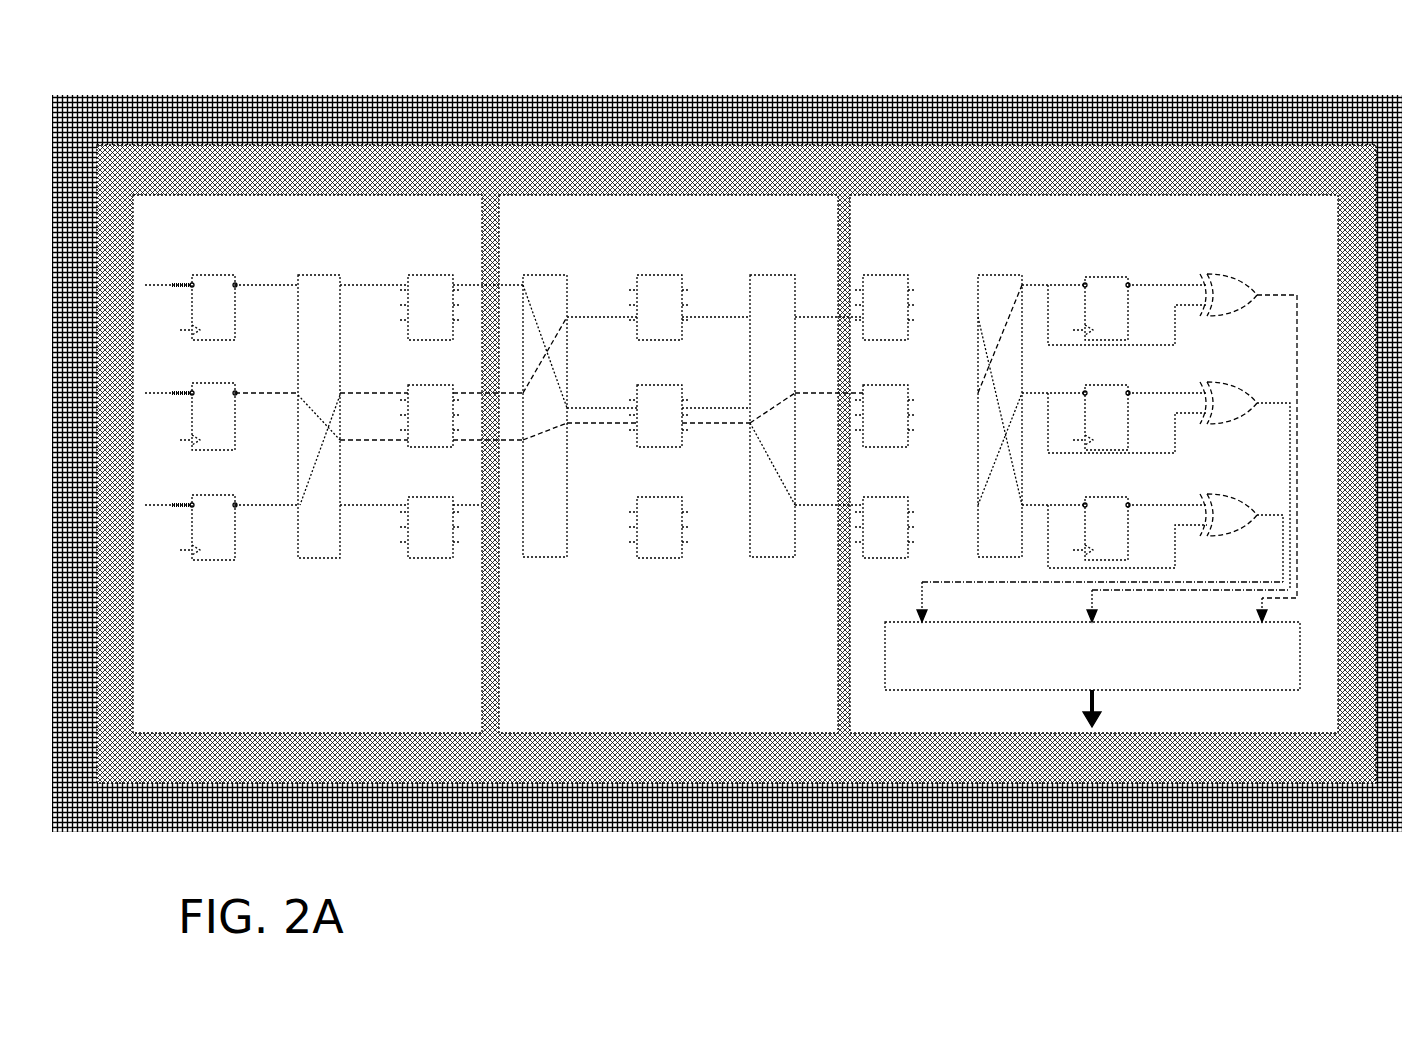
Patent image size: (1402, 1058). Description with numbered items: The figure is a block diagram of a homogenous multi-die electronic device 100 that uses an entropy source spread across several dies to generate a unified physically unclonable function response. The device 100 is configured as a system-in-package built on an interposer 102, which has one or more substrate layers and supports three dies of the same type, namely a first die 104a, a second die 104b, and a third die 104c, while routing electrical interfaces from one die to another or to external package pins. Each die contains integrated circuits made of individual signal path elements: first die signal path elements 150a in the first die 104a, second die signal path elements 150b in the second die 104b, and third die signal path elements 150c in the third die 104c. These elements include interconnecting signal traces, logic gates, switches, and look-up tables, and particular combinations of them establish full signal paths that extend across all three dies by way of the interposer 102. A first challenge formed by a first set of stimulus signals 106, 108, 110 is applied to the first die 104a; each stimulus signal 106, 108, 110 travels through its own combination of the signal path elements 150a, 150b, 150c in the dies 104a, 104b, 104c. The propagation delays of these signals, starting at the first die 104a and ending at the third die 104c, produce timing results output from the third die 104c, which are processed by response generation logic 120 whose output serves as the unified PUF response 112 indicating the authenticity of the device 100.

The homogenous multi-die electronic device 100 is at (130, 832).
The interposer 102 is at (188, 155).
The first die 104a is at (398, 205).
The second die 104b is at (612, 205).
The third die 104c is at (1133, 205).
The stimulus signal 106 is at (165, 282).
The stimulus signal 108 is at (165, 390).
The stimulus signal 110 is at (165, 502).
The unified PUF response 112 is at (1100, 700).
The response generation logic 120 is at (1228, 690).
The first die signal path elements 150a is at (238, 275).
The second die signal path elements 150b is at (642, 285).
The third die signal path elements 150c is at (884, 275).